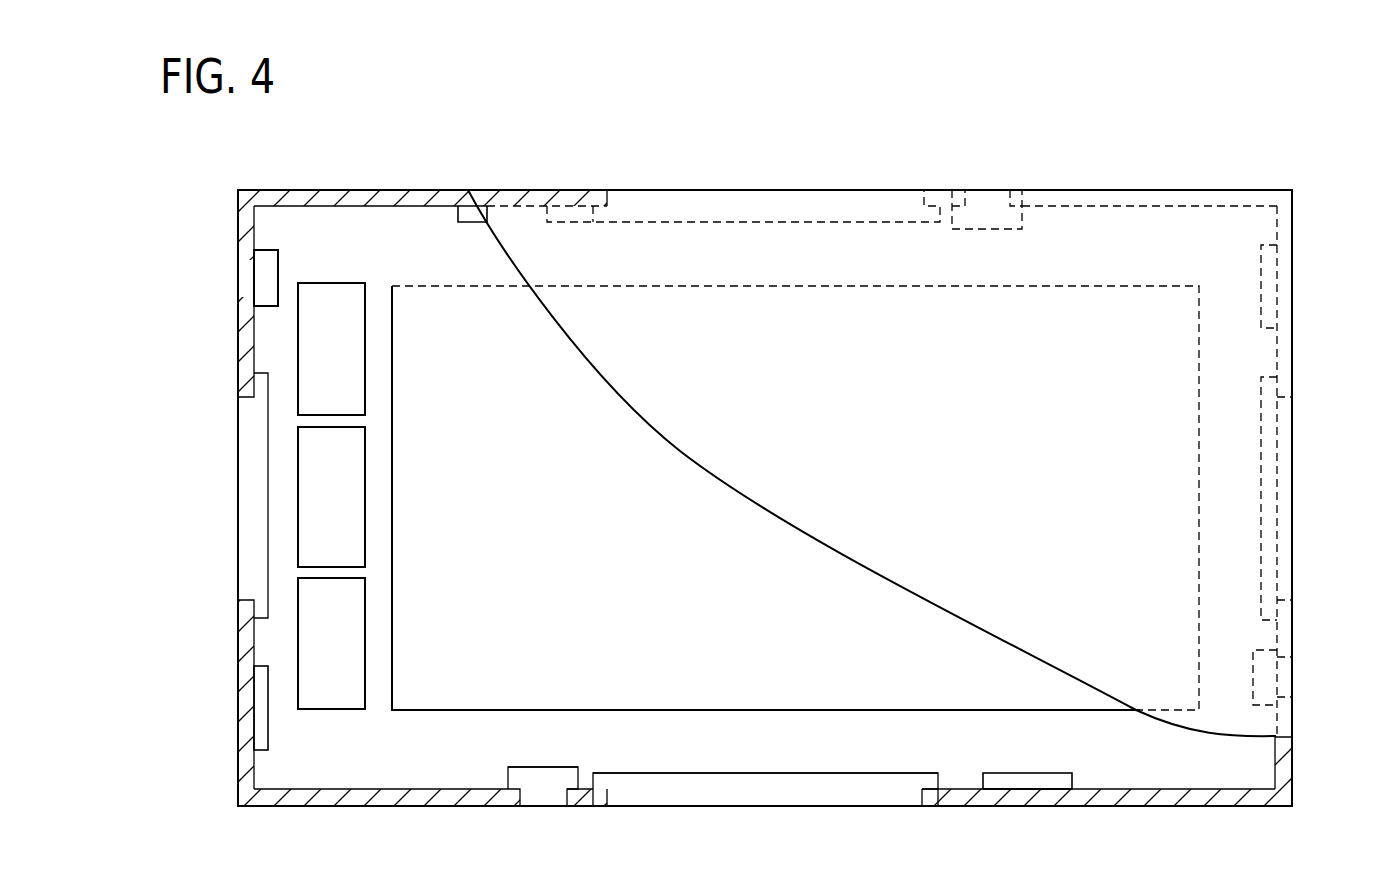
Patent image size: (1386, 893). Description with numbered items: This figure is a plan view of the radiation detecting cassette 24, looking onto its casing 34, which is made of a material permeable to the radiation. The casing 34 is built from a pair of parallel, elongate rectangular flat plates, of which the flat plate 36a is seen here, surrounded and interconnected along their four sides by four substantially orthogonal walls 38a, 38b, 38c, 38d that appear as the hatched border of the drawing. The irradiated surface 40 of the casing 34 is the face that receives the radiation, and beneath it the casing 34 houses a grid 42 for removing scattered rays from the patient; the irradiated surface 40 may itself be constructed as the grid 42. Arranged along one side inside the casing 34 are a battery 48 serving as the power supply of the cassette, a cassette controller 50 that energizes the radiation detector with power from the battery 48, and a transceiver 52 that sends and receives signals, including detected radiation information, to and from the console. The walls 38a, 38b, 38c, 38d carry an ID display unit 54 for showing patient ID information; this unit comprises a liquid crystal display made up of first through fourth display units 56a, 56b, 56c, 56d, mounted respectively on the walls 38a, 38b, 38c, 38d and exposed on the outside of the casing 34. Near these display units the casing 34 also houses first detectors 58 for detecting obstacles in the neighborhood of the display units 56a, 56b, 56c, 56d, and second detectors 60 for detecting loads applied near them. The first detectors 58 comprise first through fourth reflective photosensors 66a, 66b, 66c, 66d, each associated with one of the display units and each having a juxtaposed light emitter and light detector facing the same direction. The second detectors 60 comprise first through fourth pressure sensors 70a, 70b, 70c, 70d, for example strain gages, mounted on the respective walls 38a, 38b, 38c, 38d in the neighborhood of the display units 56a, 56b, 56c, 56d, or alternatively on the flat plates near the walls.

The radiation detecting cassette 24 is at (1143, 156).
The casing 34 is at (1233, 771).
The flat plate 36a is at (1222, 393).
The wall 38a is at (960, 797).
The wall 38b is at (256, 688).
The wall 38c is at (363, 190).
The wall 38d is at (1280, 768).
The irradiated surface 40 is at (678, 312).
The grid 42 is at (752, 683).
The battery 48 is at (347, 378).
The cassette controller 50 is at (347, 527).
The transceiver 52 is at (345, 650).
The ID display unit 54 is at (858, 763).
The first display unit 56a is at (835, 797).
The second display unit 56b is at (258, 465).
The third display unit 56c is at (767, 205).
The fourth display unit 56d is at (1268, 455).
The first detector 58 is at (551, 760).
The second detector 60 is at (1030, 763).
The first photosensor 66a is at (543, 797).
The second photosensor 66b is at (258, 277).
The third photosensor 66c is at (983, 222).
The fourth photosensor 66d is at (1268, 679).
The first pressure sensor 70a is at (1050, 788).
The second pressure sensor 70b is at (262, 735).
The third pressure sensor 70c is at (471, 216).
The fourth pressure sensor 70d is at (1270, 296).